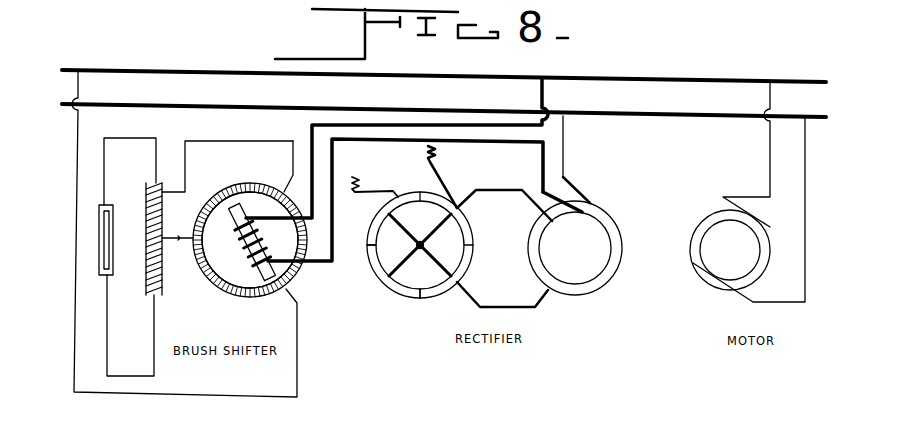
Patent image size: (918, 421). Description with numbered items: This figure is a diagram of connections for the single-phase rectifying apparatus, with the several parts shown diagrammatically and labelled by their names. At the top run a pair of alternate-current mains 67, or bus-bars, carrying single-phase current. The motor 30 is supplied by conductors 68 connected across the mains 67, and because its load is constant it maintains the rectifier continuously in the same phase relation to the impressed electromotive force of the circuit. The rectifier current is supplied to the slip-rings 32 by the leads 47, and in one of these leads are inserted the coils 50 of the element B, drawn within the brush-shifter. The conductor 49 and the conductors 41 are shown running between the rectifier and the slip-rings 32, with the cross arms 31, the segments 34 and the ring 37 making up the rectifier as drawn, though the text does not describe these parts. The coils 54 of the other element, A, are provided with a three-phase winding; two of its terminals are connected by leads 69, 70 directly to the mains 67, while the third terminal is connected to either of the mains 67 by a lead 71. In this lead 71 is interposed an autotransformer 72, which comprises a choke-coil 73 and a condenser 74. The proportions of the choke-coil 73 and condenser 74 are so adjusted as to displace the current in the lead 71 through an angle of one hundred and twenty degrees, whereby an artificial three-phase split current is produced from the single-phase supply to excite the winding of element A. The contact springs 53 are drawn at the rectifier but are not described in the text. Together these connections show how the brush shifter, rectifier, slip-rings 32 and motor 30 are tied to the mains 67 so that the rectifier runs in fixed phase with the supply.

The alternate-current mains 67 is at (660, 112).
The conductors 68 is at (805, 172).
The lead 69 is at (293, 162).
The lead 70 is at (298, 345).
The lead 71 is at (177, 251).
The autotransformer 72 is at (205, 171).
The choke-coil 73 is at (163, 222).
The condenser 74 is at (99, 274).
The element B is at (235, 216).
The coils 50 is at (248, 248).
The element A is at (218, 290).
The coils 54 is at (248, 297).
The contact springs 53 is at (367, 192).
The leads 47 is at (562, 166).
The conductor 49 is at (558, 193).
The conductors 41 is at (507, 192).
The rectifier cross arms 31 is at (420, 250).
The rectifier segments 34 is at (385, 281).
The slip-rings 32 is at (575, 248).
The rectifier ring 37 is at (590, 282).
The motor 30 is at (730, 250).